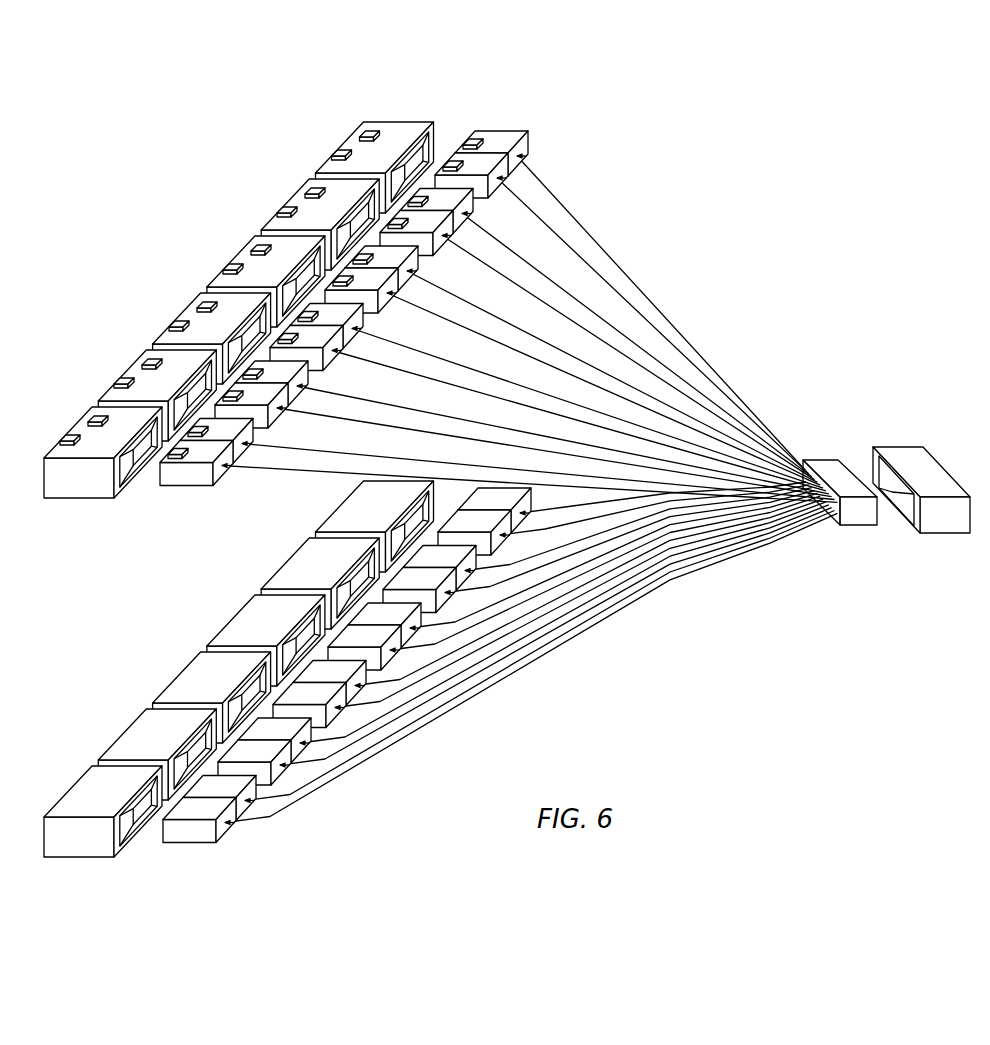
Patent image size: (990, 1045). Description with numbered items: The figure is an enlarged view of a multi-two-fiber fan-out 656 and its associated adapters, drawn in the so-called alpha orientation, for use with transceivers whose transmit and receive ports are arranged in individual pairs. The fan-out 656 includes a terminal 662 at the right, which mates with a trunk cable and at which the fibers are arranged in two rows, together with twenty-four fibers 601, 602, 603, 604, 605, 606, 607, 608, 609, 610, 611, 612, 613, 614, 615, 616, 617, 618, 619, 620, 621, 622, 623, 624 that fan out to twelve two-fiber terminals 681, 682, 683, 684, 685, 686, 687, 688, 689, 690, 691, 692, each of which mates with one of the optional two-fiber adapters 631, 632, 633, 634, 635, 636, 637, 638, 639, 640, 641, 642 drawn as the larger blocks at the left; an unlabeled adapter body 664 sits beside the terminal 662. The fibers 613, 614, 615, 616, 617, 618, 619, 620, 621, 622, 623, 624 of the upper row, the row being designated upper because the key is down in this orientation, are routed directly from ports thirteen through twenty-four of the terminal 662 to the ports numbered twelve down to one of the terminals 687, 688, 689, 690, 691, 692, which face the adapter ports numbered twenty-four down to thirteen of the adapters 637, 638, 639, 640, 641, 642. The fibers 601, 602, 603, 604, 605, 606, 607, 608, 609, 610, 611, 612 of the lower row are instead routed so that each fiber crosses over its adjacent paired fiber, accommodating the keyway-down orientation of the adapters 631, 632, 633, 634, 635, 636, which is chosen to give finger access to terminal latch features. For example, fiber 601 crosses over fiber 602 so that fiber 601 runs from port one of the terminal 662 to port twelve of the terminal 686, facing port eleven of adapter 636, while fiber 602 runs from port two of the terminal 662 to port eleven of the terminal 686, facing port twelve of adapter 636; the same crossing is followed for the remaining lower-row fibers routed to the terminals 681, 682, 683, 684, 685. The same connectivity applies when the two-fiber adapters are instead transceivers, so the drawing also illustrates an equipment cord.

The fiber 601 is at (353, 767).
The fiber 602 is at (383, 740).
The fiber 603 is at (413, 709).
The fiber 604 is at (445, 681).
The fiber 605 is at (480, 649).
The fiber 606 is at (505, 625).
The fiber 607 is at (530, 599).
The fiber 608 is at (558, 575).
The fiber 609 is at (590, 548).
The fiber 610 is at (622, 526).
The fiber 611 is at (643, 507).
The fiber 612 is at (668, 493).
The fiber 613 is at (745, 497).
The fiber 614 is at (700, 487).
The fiber 615 is at (635, 465).
The fiber 616 is at (612, 450).
The fiber 617 is at (595, 425).
The fiber 618 is at (582, 406).
The fiber 619 is at (573, 376).
The fiber 620 is at (558, 349).
The fiber 621 is at (552, 308).
The fiber 622 is at (541, 273).
The fiber 623 is at (546, 224).
The fiber 624 is at (548, 190).
The 2-fiber adapter 631 is at (345, 520).
The 2-fiber adapter 632 is at (290, 576).
The 2-fiber adapter 633 is at (238, 633).
The 2-fiber adapter 634 is at (185, 690).
The 2-fiber adapter 635 is at (132, 747).
The 2-fiber adapter 636 is at (78, 814).
The 2-fiber adapter 637 is at (372, 124).
The 2-fiber adapter 638 is at (305, 192).
The 2-fiber adapter 639 is at (255, 252).
The 2-fiber adapter 640 is at (192, 316).
The 2-fiber adapter 641 is at (135, 376).
The 2-fiber adapter 642 is at (80, 430).
The multi-2-fiber fan-out 656 is at (735, 265).
The terminal 662 is at (842, 472).
The multi-fiber adapter 664 is at (932, 478).
The 2-fiber terminal 681 is at (457, 523).
The 2-fiber terminal 682 is at (403, 578).
The 2-fiber terminal 683 is at (350, 638).
The 2-fiber terminal 684 is at (295, 695).
The 2-fiber terminal 685 is at (240, 752).
The 2-fiber terminal 686 is at (190, 808).
The 2-fiber terminal 687 is at (513, 147).
The 2-fiber terminal 688 is at (455, 200).
The 2-fiber terminal 689 is at (398, 255).
The 2-fiber terminal 690 is at (343, 312).
The 2-fiber terminal 691 is at (288, 372).
The 2-fiber terminal 692 is at (230, 430).